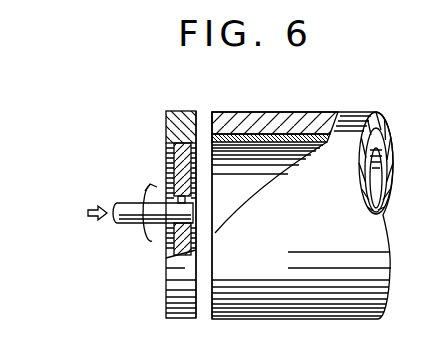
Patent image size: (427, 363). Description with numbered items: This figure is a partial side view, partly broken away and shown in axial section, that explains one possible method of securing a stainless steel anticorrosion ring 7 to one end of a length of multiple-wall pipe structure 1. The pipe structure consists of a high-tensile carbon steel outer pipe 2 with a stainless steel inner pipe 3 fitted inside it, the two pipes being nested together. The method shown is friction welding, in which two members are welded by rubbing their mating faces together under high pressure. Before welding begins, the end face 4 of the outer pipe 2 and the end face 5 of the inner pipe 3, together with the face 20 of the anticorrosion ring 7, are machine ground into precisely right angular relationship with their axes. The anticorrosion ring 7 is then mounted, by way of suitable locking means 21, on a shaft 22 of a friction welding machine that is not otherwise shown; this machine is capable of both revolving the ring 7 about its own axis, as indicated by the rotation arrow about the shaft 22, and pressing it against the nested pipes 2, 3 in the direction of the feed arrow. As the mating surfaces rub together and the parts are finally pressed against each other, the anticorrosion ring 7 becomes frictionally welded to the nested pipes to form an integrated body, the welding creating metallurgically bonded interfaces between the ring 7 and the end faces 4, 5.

The cylinder 1 is at (363, 102).
The outer pipe 2 is at (310, 118).
The inner pipe 3 is at (322, 138).
The end face 4 is at (214, 112).
The end face 5 is at (208, 143).
The anticorrosion ring 7 is at (178, 293).
The face 20 is at (205, 262).
The locking means 21 is at (182, 168).
The shaft 22 is at (130, 212).